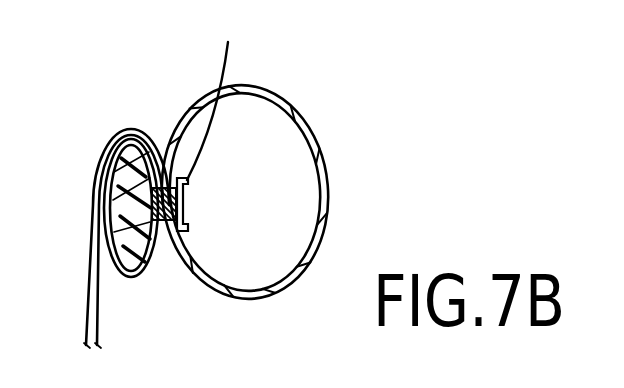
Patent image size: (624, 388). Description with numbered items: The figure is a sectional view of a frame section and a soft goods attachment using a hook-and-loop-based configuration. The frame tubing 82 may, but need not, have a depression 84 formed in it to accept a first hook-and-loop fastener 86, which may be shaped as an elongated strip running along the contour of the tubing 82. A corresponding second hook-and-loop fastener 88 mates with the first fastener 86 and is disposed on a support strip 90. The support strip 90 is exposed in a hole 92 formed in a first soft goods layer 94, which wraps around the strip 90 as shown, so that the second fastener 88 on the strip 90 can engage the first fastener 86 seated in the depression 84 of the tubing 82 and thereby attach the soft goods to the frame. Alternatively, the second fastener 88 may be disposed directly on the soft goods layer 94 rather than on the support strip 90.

The tubing 82 is at (282, 100).
The depression 84 is at (185, 215).
The first hook-and-loop fastener 86 is at (225, 95).
The second hook-and-loop fastener 88 is at (160, 207).
The support strip 90 is at (140, 280).
The hole 92 is at (118, 152).
The first soft goods layer 94 is at (146, 262).